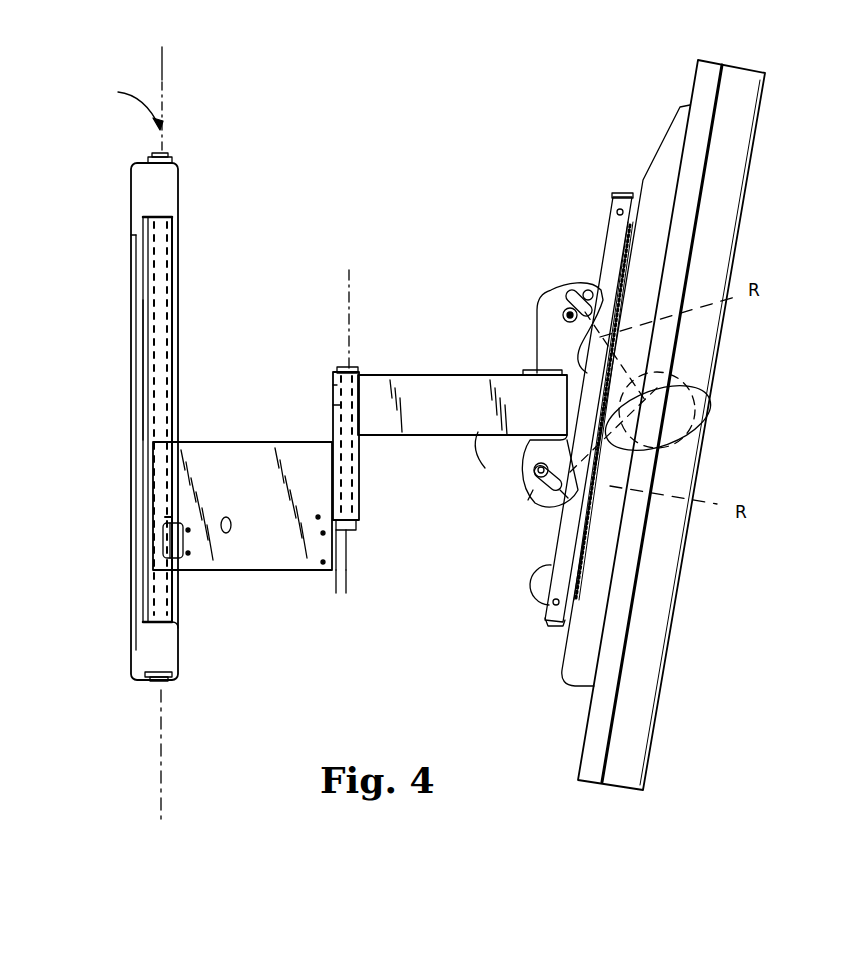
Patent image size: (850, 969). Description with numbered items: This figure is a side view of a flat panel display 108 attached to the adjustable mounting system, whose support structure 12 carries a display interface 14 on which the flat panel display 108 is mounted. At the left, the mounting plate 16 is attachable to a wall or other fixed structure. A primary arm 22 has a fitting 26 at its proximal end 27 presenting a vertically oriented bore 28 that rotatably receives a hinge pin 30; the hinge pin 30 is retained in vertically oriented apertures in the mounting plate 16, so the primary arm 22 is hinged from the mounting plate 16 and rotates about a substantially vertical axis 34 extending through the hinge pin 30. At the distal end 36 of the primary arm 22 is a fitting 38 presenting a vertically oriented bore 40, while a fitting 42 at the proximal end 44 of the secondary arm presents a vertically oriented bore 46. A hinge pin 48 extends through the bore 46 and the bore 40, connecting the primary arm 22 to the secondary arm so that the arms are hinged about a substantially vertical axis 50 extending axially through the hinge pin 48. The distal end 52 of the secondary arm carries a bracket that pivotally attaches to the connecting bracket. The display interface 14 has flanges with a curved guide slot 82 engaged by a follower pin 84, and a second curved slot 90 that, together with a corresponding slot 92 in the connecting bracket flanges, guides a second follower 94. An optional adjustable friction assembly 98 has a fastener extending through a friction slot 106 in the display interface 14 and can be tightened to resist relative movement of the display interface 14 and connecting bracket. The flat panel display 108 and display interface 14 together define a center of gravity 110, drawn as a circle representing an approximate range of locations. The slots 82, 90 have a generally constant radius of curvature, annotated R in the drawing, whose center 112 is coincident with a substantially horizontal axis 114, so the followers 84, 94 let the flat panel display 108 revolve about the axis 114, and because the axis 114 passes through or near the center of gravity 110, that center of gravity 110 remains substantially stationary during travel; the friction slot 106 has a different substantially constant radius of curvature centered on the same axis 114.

The support structure 12 is at (398, 338).
The display interface 14 is at (617, 228).
The mounting plate 16 is at (153, 645).
The primary arm 22 is at (234, 458).
The fitting 26 is at (168, 360).
The proximal end 27 is at (177, 568).
The bore 28 is at (172, 264).
The hinge pin 30 is at (168, 158).
The vertical axis 34 is at (166, 70).
The distal end 36 is at (341, 579).
The fitting 38 is at (362, 480).
The bore 40 is at (360, 512).
The fitting 42 is at (334, 385).
The proximal end 44 is at (360, 370).
The bore 46 is at (337, 406).
The hinge pin 48 is at (338, 378).
The vertical axis 50 is at (349, 268).
The distal end 52 is at (523, 385).
The slot 82 is at (588, 290).
The follower pin 84 is at (568, 306).
The slot 90 is at (525, 497).
The slot 92 is at (522, 481).
The second follower 94 is at (538, 462).
The adjustable friction assembly 98 is at (563, 313).
The friction slot 106 is at (540, 330).
The flat panel display 108 is at (723, 192).
The center of gravity 110 is at (663, 373).
The center 112 is at (647, 417).
The horizontal axis 114 is at (657, 443).